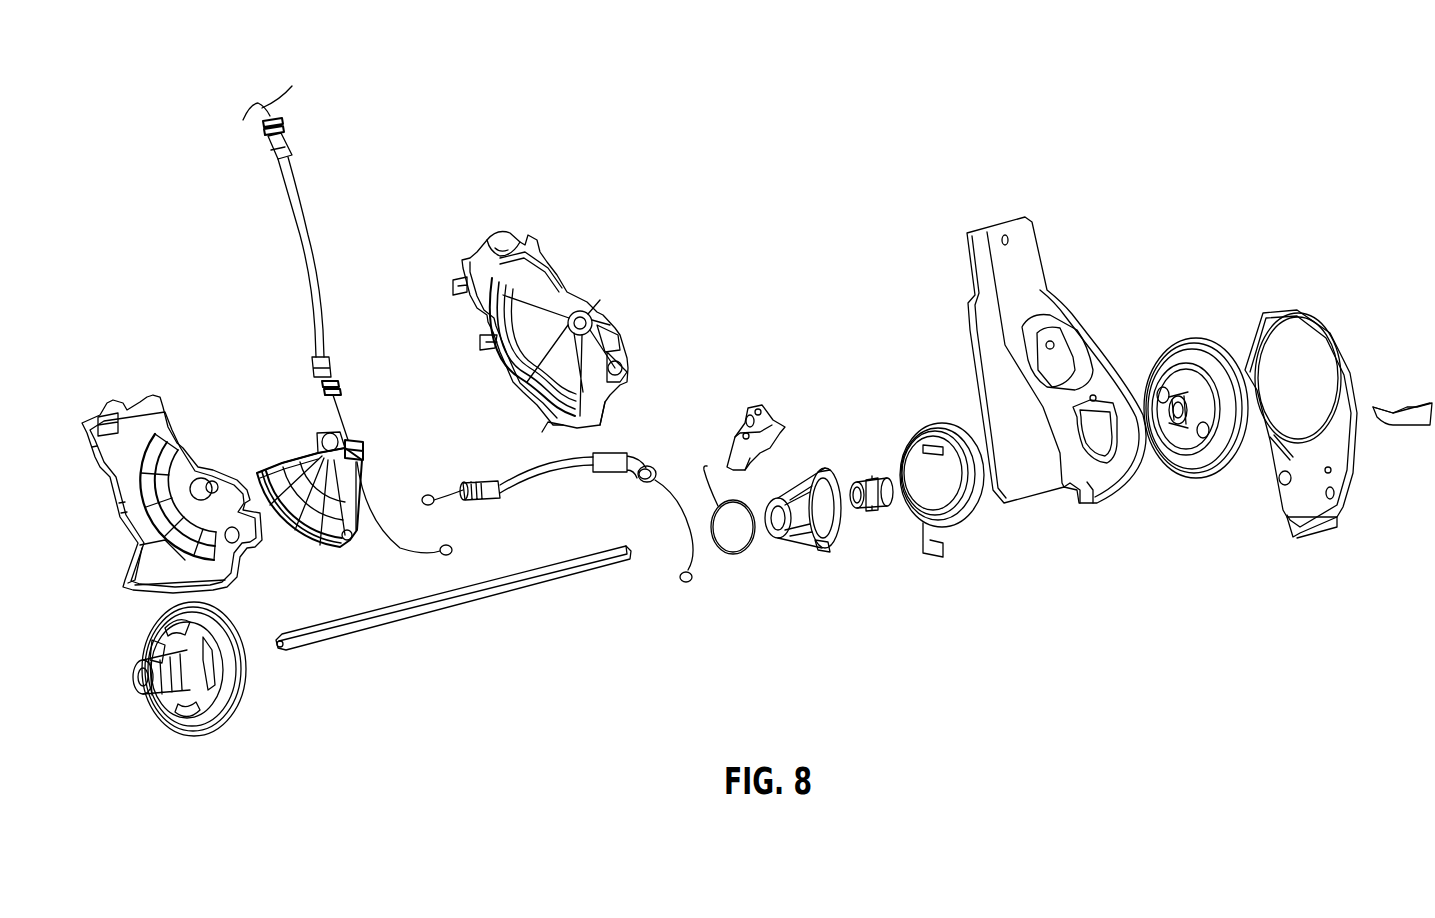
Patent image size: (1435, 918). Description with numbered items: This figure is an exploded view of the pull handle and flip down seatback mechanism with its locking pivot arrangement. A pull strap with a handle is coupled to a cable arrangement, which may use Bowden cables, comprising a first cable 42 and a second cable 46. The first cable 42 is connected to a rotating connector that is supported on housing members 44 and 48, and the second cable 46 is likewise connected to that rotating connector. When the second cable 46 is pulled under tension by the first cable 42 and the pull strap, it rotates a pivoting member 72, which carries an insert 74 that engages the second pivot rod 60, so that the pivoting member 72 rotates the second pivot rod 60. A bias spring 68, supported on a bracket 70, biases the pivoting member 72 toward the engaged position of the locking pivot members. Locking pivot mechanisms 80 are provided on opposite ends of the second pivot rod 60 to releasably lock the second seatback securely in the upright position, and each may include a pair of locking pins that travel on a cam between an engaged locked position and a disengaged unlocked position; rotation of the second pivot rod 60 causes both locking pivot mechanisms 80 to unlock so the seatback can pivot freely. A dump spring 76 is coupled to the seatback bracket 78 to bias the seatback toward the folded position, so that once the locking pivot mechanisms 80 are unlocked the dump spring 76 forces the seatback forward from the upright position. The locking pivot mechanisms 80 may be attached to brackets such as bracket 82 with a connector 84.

The first cable 42 is at (305, 235).
The housing member 44 is at (172, 433).
The second cable 46 is at (525, 472).
The housing member 48 is at (538, 262).
The second pivot rod 60 is at (370, 623).
The bias spring 68 is at (728, 560).
The bracket 70 is at (745, 412).
The pivoting member 72 is at (835, 487).
The insert 74 is at (887, 487).
The dump spring 76 is at (950, 437).
The seatback bracket 78 is at (1038, 268).
The locking pivot mechanism 80 is at (1180, 350).
The bracket 82 is at (1277, 315).
The connector 84 is at (1408, 407).